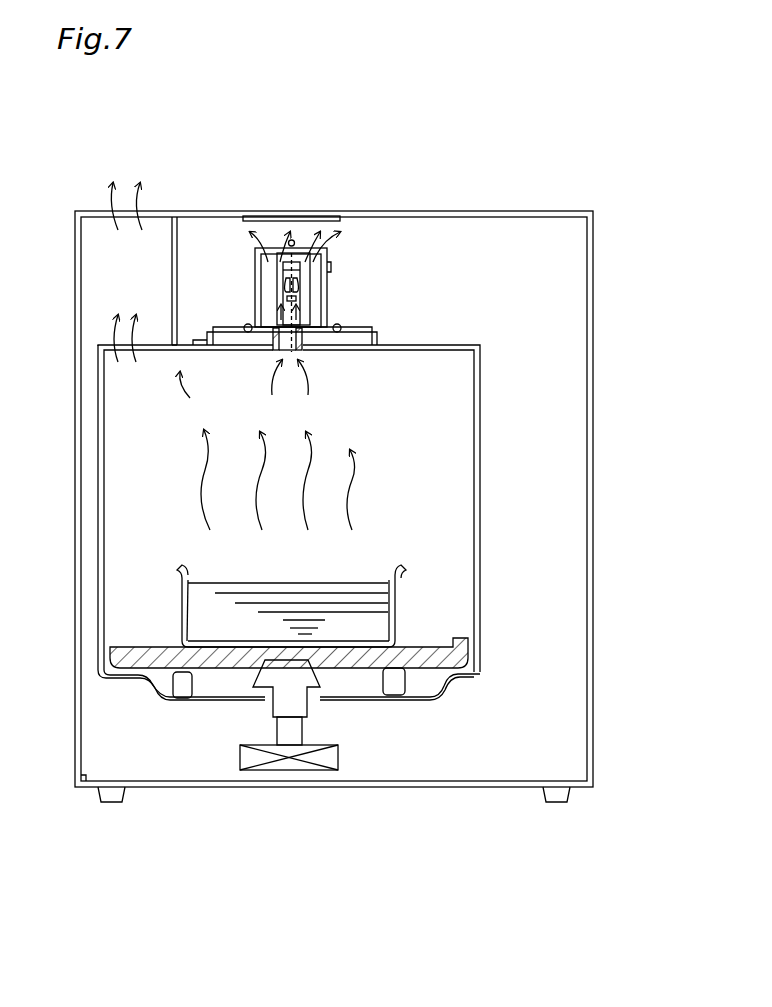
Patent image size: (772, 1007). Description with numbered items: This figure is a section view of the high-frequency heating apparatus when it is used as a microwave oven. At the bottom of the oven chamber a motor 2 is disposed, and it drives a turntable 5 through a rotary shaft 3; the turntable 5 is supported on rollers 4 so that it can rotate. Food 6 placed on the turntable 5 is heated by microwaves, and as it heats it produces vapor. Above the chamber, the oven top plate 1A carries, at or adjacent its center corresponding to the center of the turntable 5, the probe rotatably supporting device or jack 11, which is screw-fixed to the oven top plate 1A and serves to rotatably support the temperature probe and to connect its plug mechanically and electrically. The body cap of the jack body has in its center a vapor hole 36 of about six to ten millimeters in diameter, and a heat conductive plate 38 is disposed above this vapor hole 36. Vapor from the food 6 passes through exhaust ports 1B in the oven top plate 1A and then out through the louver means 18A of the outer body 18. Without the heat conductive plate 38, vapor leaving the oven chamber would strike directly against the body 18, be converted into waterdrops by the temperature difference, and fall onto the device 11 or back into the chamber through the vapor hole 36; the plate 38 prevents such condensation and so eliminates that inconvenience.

The body 18 is at (107, 213).
The louver means 18A is at (126, 272).
The heat conductive plate 38 is at (268, 214).
The vapor hole 36 is at (288, 246).
The probe rotatably supporting device (jack) 11 is at (335, 268).
The oven top plate 1A is at (340, 355).
The exhaust ports 1B is at (113, 351).
The food 6 is at (380, 622).
The turntable 5 is at (458, 655).
The rollers 4 is at (393, 687).
The rotary shaft 3 is at (297, 702).
The motor 2 is at (275, 772).